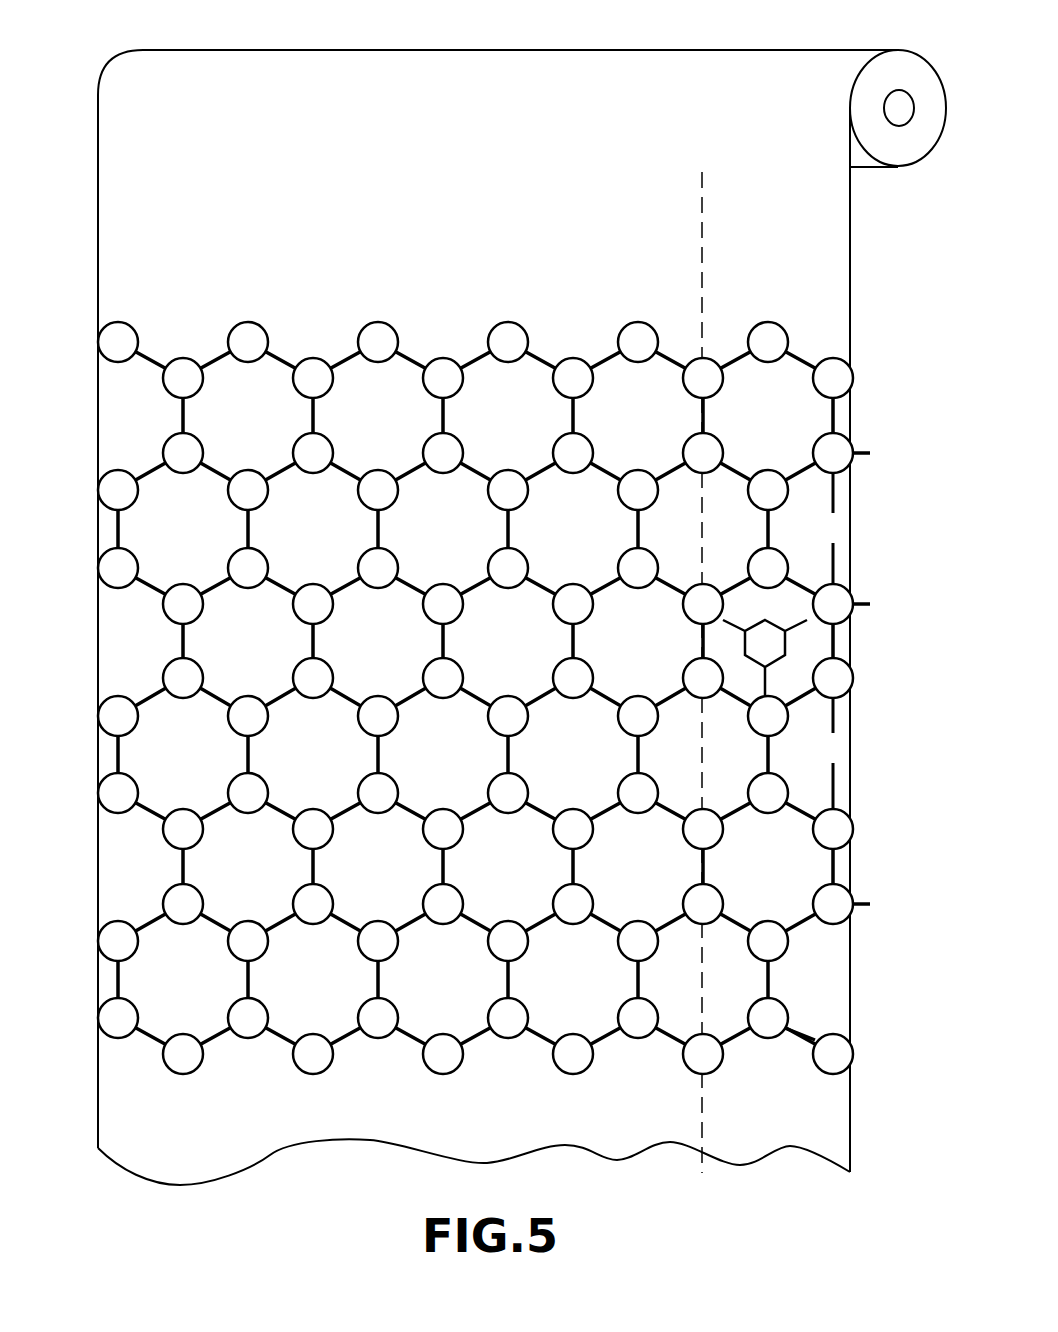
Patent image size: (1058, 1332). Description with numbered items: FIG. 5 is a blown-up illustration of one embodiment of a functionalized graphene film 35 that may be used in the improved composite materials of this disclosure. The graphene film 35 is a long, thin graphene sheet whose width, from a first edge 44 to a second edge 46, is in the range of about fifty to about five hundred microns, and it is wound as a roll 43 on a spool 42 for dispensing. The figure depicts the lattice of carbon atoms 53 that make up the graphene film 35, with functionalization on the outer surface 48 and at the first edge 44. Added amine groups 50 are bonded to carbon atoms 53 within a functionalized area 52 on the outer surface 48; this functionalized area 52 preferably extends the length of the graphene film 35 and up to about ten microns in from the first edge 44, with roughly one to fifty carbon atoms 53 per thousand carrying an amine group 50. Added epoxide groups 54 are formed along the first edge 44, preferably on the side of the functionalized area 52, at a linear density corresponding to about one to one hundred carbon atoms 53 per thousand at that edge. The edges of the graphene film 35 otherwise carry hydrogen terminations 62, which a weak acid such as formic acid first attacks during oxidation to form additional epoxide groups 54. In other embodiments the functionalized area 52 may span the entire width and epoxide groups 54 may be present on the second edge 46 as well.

The graphene film 35 is at (469, 671).
The spool 42 is at (898, 108).
The roll 43 is at (243, 80).
The first edge 44 is at (850, 345).
The second edge 46 is at (98, 672).
The outer surface 48 is at (130, 262).
The amine groups 50 is at (765, 640).
The functionalized area 52 is at (788, 298).
The carbon atoms 53 is at (378, 342).
The epoxide groups 54 is at (840, 517).
The hydrogen terminations 62 is at (885, 885).